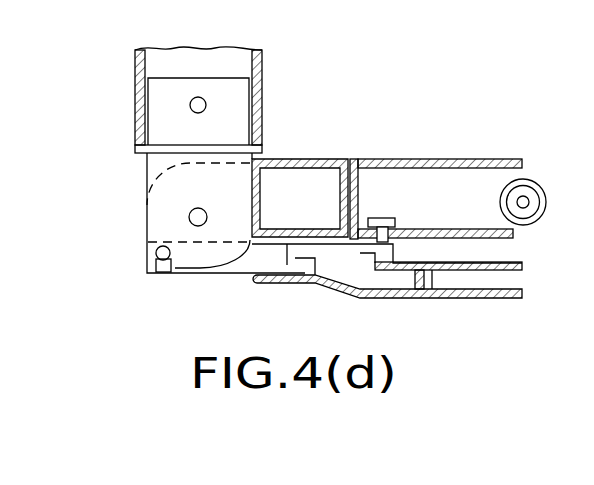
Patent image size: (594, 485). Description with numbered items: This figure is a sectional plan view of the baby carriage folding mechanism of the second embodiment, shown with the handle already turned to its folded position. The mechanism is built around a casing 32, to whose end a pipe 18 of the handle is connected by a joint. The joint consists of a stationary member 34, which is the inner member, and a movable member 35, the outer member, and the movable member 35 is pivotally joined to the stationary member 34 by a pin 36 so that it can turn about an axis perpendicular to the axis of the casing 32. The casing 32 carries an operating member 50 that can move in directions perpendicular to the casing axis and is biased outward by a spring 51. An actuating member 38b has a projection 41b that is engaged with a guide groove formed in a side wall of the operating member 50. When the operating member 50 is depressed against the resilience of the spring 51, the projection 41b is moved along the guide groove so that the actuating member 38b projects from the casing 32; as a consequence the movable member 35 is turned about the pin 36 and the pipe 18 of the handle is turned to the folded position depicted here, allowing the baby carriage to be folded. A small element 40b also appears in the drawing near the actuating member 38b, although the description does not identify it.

The pipe 18 is at (262, 95).
The casing 32 is at (370, 158).
The stationary member 34 is at (162, 176).
The movable member 35 is at (147, 165).
The pin 36 is at (189, 219).
The actuating member 38b is at (237, 274).
The stop pin 40b is at (158, 262).
The projection 41b is at (397, 236).
The operating member 50 is at (443, 160).
The spring 51 is at (533, 182).